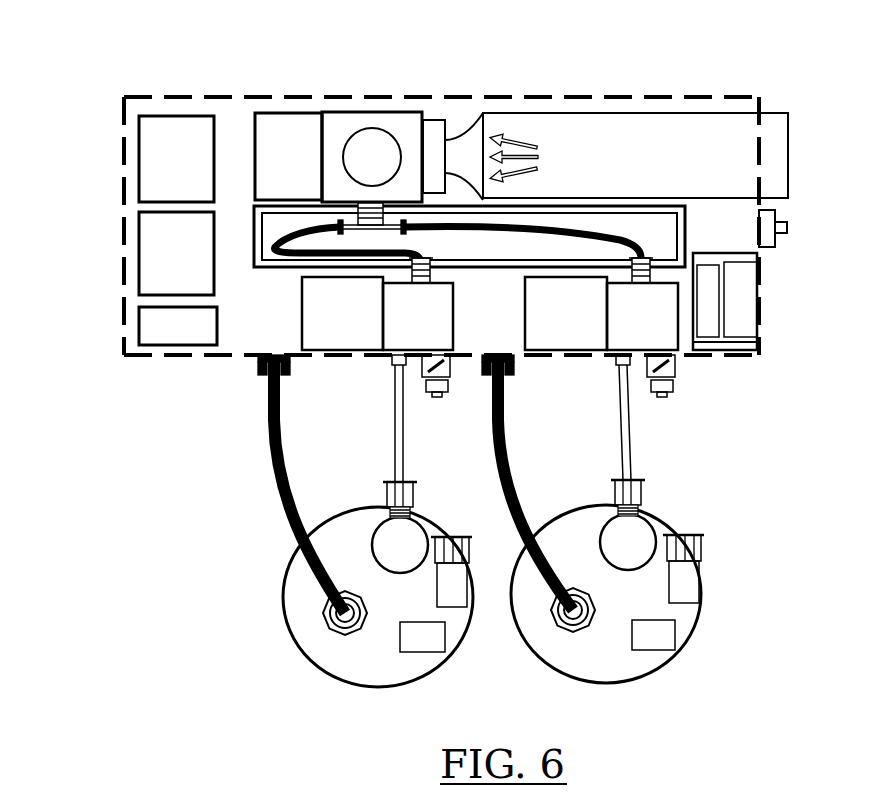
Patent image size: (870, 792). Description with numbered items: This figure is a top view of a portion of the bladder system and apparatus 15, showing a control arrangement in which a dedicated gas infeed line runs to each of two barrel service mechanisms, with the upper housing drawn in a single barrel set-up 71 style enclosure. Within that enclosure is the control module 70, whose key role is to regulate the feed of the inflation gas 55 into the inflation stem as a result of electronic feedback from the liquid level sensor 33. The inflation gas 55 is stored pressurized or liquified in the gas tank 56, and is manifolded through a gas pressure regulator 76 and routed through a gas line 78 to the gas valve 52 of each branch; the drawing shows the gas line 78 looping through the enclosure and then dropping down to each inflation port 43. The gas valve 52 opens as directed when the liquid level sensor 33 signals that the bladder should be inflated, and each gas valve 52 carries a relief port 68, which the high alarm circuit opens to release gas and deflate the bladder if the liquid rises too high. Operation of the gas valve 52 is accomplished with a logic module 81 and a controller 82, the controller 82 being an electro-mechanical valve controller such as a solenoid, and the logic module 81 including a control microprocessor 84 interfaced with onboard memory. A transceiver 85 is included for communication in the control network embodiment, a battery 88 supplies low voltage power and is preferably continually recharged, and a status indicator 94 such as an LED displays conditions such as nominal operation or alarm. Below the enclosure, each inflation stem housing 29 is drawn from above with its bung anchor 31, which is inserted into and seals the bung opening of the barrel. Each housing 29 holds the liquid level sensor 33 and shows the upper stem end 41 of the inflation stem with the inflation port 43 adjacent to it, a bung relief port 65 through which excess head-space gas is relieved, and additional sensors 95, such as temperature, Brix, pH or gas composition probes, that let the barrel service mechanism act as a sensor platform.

The bladder system and apparatus 15 is at (90, 100).
The single barrel set-up 71 is at (183, 53).
The control module 70 is at (288, 97).
The gas pressure regulator 76 is at (363, 118).
The inflation gas 55 is at (508, 137).
The gas tank 56 is at (772, 168).
The status indicator 94 is at (787, 229).
The control microprocessor 84 is at (155, 170).
The logic module 81 is at (155, 262).
The transceiver 85 is at (155, 331).
The gas line 78 is at (510, 232).
The controller 82 is at (318, 340).
The gas valve 52 is at (445, 335).
The battery 88 is at (752, 305).
The relief port 68 is at (445, 390).
The inflation stem housing 29 is at (487, 580).
The bung anchor 31 is at (355, 685).
The upper stem end 41 is at (375, 543).
The inflation port 43 is at (386, 510).
The additional sensors 95 is at (466, 552).
The liquid level sensor 33 is at (315, 632).
The bung relief port 65 is at (408, 648).